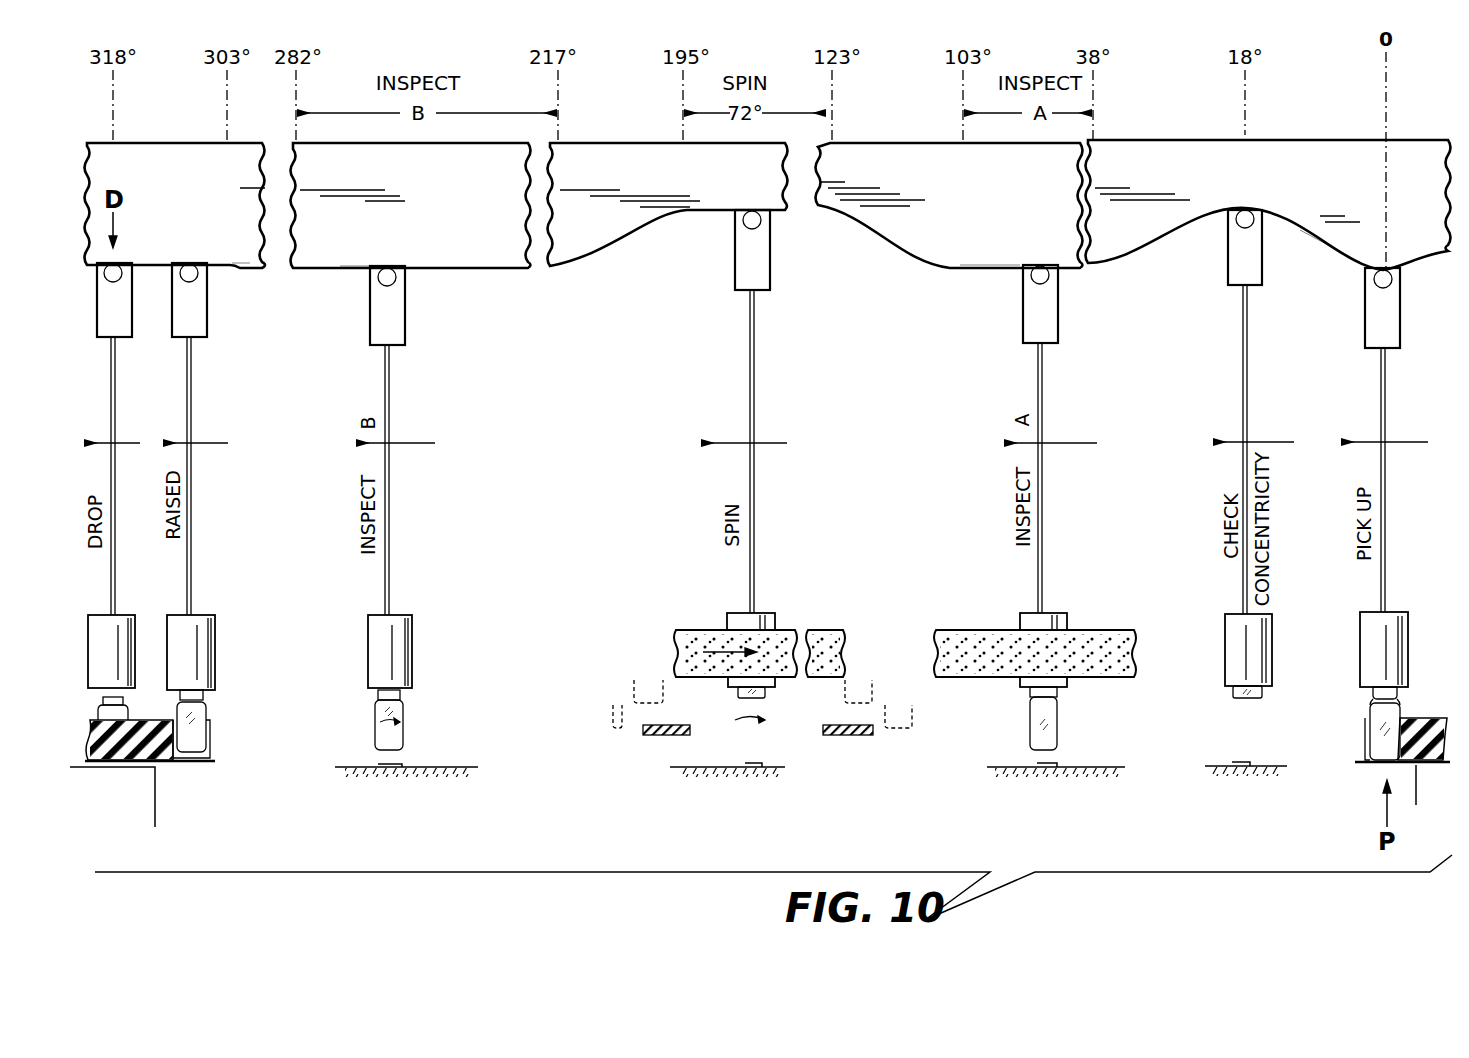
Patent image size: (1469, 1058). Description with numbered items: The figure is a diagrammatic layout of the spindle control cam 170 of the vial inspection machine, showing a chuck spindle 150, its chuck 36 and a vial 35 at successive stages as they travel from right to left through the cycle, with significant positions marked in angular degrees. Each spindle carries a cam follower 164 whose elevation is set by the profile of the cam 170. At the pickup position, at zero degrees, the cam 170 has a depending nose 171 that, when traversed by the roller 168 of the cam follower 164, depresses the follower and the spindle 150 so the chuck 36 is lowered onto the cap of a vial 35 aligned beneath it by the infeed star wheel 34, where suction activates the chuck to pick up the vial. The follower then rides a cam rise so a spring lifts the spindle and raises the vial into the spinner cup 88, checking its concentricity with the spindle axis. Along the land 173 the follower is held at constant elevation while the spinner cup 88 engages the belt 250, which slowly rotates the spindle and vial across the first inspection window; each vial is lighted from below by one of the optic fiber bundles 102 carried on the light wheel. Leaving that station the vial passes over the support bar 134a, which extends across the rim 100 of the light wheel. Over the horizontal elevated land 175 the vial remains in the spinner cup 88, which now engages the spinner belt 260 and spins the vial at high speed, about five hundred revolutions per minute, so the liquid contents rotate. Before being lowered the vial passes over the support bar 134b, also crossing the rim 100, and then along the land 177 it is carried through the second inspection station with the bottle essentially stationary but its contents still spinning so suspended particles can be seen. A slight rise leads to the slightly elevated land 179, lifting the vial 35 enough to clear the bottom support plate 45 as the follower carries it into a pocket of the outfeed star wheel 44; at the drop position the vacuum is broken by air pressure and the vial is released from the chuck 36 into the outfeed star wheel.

The infeed star wheel 34 is at (1440, 740).
The vial 35 is at (203, 708).
The chuck 36 is at (1043, 698).
The outfeed star wheel 44 is at (98, 735).
The bottom support plate 45 is at (212, 752).
The spinner cup 88 is at (775, 618).
The rim of the light wheel 100 is at (777, 767).
The optic fiber bundles 102 is at (396, 767).
The support bar 134a is at (845, 738).
The support bar 134b is at (655, 737).
The chuck spindle 150 is at (757, 566).
The cam follower 164 is at (103, 320).
The roller 168 is at (1380, 281).
The cam 170 is at (1005, 216).
The depending nose 171 is at (1385, 268).
The land 173 is at (988, 267).
The horizontal elevated land 175 is at (710, 216).
The land 177 is at (353, 266).
The slightly elevated land 179 is at (150, 265).
The belt 250 is at (1000, 657).
The spinner belt 260 is at (838, 630).